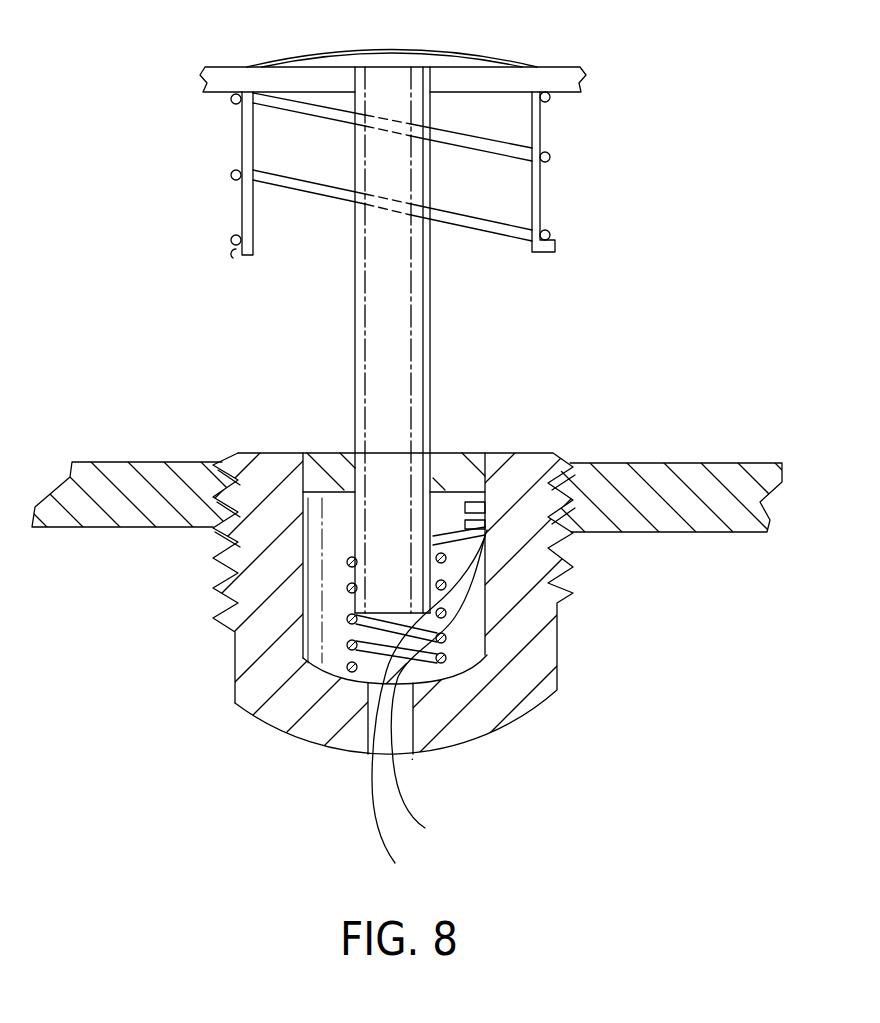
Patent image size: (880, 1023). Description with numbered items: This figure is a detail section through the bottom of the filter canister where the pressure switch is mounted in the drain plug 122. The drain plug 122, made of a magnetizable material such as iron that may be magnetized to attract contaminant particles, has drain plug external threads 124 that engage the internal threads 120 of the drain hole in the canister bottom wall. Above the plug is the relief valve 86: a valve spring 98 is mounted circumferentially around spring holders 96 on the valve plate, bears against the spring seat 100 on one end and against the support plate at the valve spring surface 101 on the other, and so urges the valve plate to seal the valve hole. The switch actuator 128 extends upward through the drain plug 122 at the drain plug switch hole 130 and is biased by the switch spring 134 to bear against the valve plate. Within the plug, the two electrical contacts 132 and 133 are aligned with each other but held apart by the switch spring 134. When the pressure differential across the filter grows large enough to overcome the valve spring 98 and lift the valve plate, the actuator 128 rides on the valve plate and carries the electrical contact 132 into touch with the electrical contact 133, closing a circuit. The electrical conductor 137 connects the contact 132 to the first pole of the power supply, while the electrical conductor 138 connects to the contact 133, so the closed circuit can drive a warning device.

The relief valve 86 is at (490, 52).
The valve spring surface 101 is at (583, 79).
The valve spring 98 is at (512, 152).
The spring seat 100 is at (233, 242).
The spring holders 96 is at (232, 258).
The switch actuator 128 is at (392, 387).
The drain plug switch hole 130 is at (420, 460).
The internal threads 120 is at (228, 482).
The drain plug external threads 124 is at (222, 553).
The drain plug 122 is at (497, 575).
The electrical contact 133 is at (487, 528).
The electrical contact 132 is at (485, 535).
The switch spring 134 is at (428, 658).
The electrical conductor 137 is at (373, 825).
The electrical conductor 138 is at (420, 811).